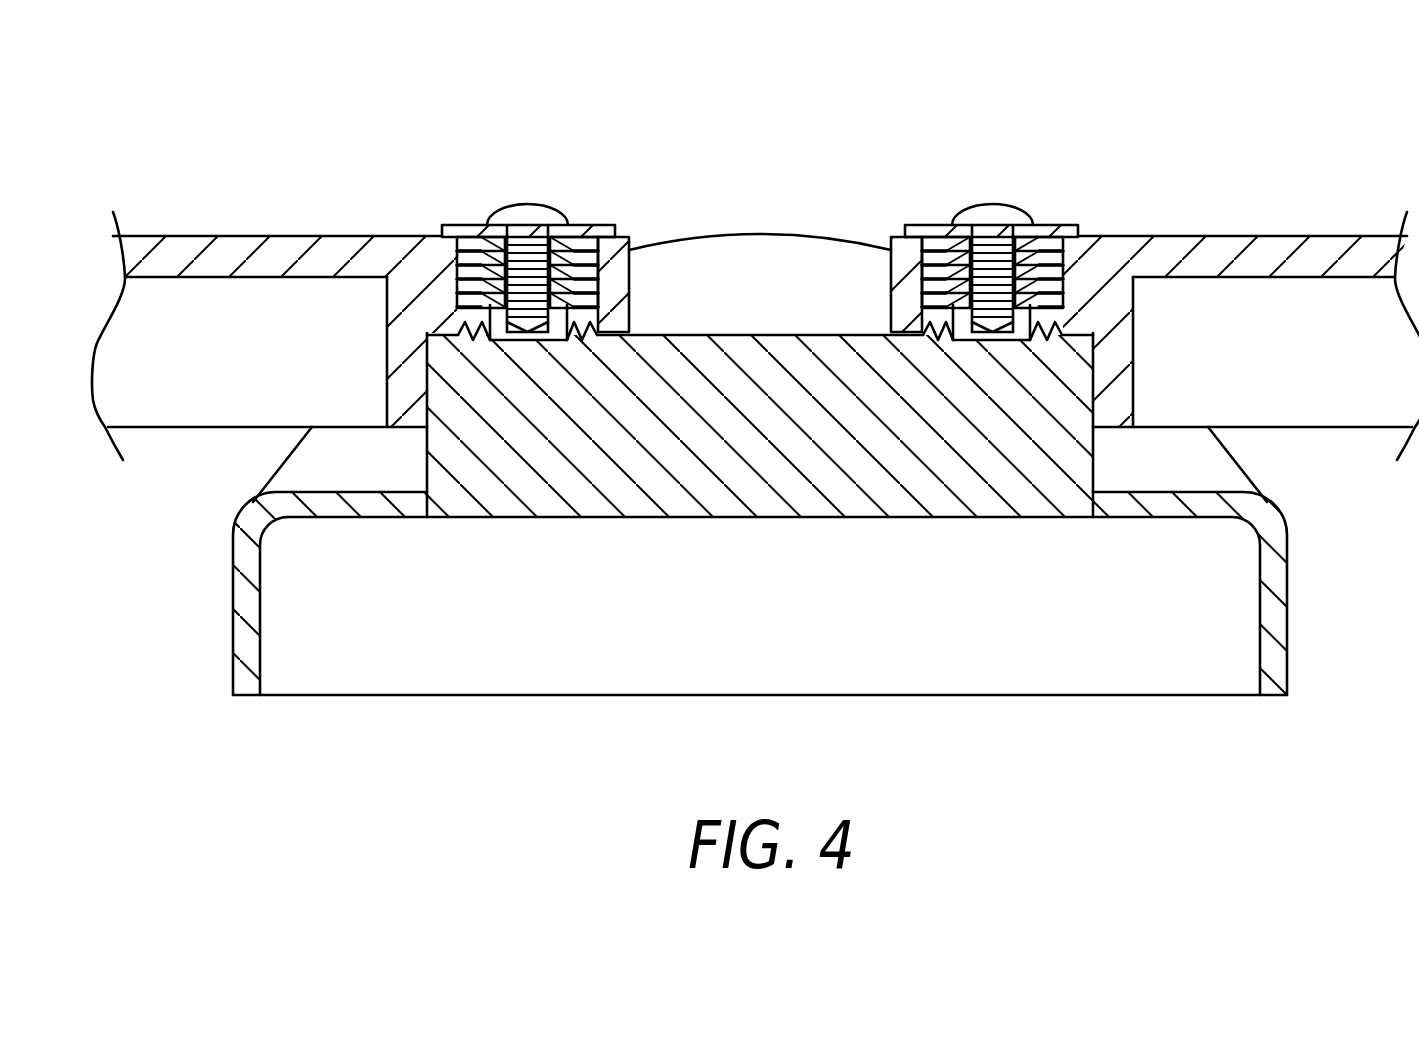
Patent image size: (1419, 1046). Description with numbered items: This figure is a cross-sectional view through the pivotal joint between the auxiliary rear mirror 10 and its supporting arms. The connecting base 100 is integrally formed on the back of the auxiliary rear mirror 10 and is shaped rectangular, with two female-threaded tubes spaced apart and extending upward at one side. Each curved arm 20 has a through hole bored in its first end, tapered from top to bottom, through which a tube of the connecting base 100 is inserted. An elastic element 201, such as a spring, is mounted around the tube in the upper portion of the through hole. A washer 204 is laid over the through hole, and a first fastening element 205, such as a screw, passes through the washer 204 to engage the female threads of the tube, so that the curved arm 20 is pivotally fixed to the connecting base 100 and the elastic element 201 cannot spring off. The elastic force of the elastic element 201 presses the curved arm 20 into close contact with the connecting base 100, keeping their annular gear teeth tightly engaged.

The auxiliary rear mirror 10 is at (877, 655).
The connecting base 100 is at (768, 463).
The curved arm 20 is at (252, 258).
The elastic element 201 is at (578, 237).
The washer 204 is at (463, 233).
The first fastening element 205 is at (519, 215).